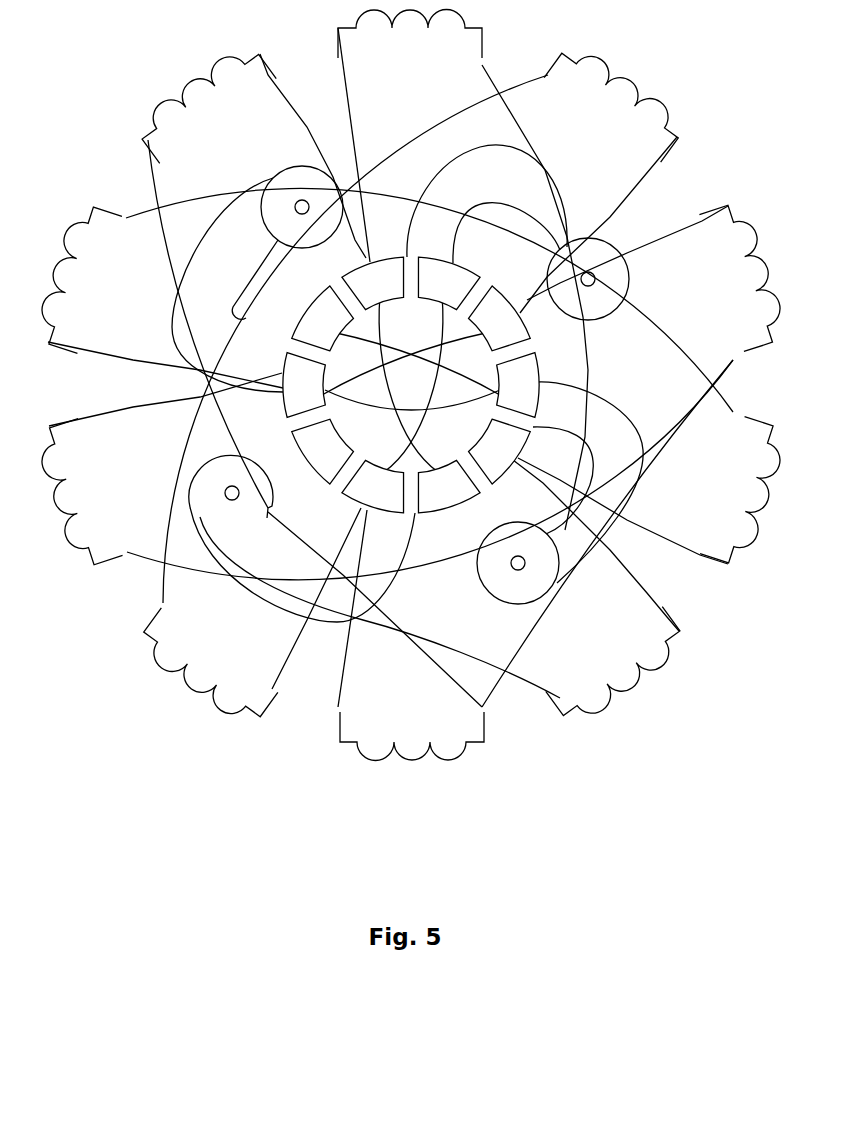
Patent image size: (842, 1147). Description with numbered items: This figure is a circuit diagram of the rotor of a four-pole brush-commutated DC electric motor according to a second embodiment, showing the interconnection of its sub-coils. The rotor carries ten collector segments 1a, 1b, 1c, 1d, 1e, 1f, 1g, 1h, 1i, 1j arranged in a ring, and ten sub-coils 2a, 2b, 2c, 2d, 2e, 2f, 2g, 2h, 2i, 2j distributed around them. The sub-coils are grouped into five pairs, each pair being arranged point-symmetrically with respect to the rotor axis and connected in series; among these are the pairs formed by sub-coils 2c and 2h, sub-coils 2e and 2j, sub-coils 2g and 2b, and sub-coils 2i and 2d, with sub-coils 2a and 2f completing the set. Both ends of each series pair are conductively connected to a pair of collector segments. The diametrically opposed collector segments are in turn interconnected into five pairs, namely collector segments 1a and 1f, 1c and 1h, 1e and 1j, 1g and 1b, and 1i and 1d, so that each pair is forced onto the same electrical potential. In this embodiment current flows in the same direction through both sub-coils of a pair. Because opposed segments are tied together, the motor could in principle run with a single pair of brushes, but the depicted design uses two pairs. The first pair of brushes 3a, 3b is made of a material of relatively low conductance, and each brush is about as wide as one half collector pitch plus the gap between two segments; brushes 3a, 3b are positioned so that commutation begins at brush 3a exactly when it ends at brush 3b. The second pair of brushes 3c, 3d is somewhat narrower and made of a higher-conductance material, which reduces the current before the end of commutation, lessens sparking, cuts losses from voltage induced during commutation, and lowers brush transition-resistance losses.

The collector segment 1a is at (304, 385).
The collector segment 1b is at (324, 447).
The collector segment 1c is at (378, 486).
The collector segment 1d is at (444, 486).
The collector segment 1e is at (497, 447).
The collector segment 1f is at (518, 385).
The collector segment 1g is at (497, 322).
The collector segment 1h is at (444, 283).
The collector segment 1i is at (378, 283).
The collector segment 1j is at (324, 322).
The sub-coil 2a is at (382, 470).
The sub-coil 2b is at (247, 620).
The sub-coil 2c is at (411, 635).
The sub-coil 2d is at (445, 595).
The sub-coil 2e is at (654, 493).
The sub-coil 2f is at (636, 453).
The sub-coil 2g is at (426, 320).
The sub-coil 2h is at (463, 269).
The sub-coil 2i is at (306, 373).
The sub-coil 2j is at (382, 300).
The brush 3a is at (257, 279).
The brush 3b is at (302, 538).
The brush 3c is at (560, 493).
The brush 3d is at (518, 232).